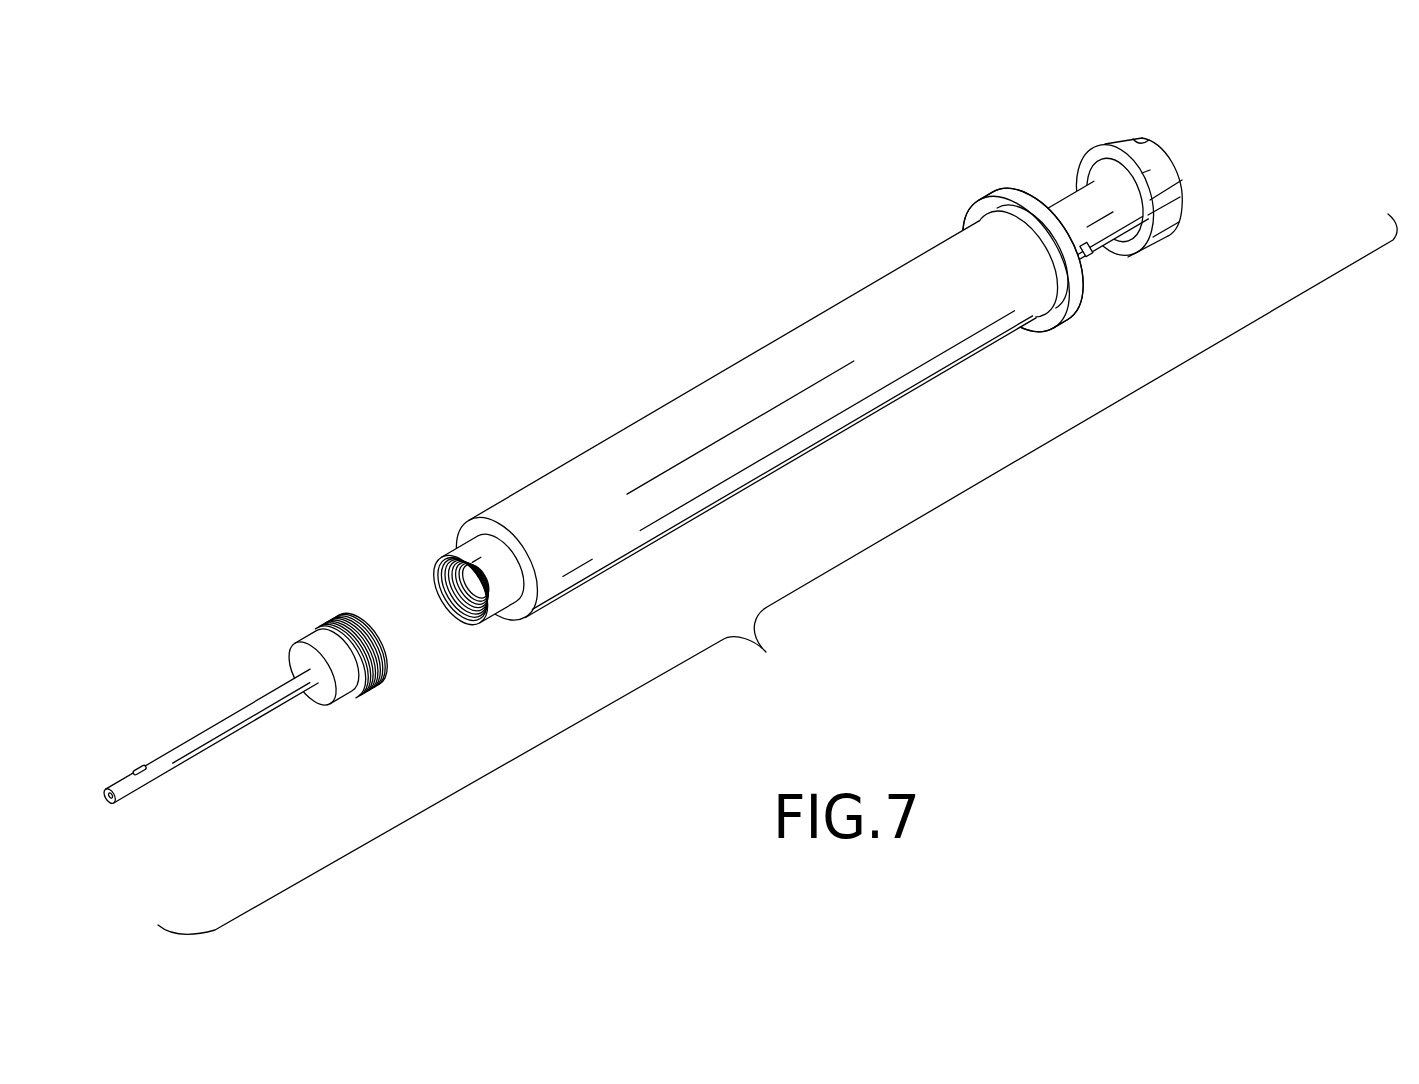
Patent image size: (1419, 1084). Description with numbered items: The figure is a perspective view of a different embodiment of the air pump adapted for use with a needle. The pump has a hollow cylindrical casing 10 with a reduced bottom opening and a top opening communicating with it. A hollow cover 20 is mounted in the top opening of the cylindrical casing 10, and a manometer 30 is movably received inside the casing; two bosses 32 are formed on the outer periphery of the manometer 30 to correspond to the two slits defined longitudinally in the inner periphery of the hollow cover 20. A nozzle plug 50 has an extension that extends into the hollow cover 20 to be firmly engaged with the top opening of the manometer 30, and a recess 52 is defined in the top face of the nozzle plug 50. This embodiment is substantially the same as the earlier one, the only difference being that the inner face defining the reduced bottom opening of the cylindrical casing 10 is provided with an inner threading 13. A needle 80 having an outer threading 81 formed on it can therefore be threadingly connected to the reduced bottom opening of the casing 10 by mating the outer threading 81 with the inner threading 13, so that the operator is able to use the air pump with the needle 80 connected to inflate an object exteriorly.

The hollow cylindrical casing 10 is at (612, 560).
The inner threading 13 is at (470, 614).
The hollow cover 20 is at (1012, 206).
The manometer 30 is at (1095, 185).
The bosses 32 is at (1093, 258).
The nozzle plug 50 is at (1177, 231).
The recess 52 is at (1143, 141).
The needle 80 is at (197, 760).
The outer threading 81 is at (370, 680).